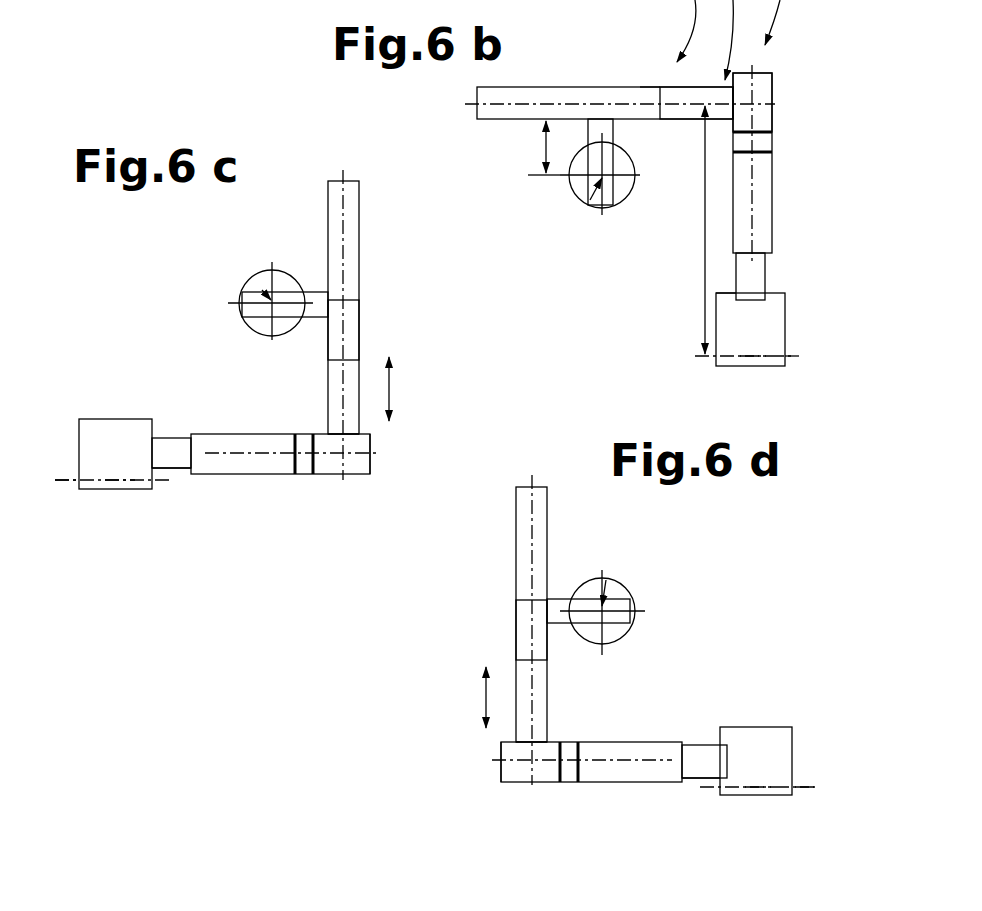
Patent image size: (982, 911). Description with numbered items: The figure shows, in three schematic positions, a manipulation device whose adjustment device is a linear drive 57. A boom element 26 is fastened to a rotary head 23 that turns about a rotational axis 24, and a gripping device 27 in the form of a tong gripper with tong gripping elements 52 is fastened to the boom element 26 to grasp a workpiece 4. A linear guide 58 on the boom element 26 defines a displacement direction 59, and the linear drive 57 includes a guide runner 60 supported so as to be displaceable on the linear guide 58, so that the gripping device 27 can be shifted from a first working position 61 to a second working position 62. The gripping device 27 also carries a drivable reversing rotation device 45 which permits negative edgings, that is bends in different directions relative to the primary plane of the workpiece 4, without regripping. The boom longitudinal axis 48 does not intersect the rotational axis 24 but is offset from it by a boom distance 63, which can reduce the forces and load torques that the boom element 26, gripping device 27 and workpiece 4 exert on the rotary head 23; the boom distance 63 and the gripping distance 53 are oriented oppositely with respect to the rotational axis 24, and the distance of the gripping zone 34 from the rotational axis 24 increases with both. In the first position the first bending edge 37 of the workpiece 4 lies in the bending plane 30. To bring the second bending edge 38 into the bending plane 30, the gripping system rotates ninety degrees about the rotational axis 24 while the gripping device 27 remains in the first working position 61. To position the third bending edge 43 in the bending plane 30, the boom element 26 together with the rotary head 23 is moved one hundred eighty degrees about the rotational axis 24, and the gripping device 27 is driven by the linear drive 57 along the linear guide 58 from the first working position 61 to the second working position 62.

In FIG. 6B, the workpiece 4 is at (730, 313).
In FIG. 6C, the workpiece 4 is at (128, 436).
In FIG. 6D, the workpiece 4 is at (752, 740).
In FIG. 6B, the rotary head 23 is at (572, 190).
In FIG. 6C, the rotary head 23 is at (255, 326).
In FIG. 6D, the rotary head 23 is at (620, 597).
In FIG. 6B, the rotational axis 24 is at (590, 200).
In FIG. 6C, the rotational axis 24 is at (262, 290).
In FIG. 6D, the rotational axis 24 is at (606, 580).
In FIG. 6B, the boom element 26 is at (687, 110).
In FIG. 6C, the boom element 26 is at (352, 358).
In FIG. 6D, the boom element 26 is at (522, 555).
In FIG. 6B, the gripping device 27 is at (762, 225).
In FIG. 6C, the gripping device 27 is at (268, 465).
In FIG. 6D, the gripping device 27 is at (598, 772).
In FIG. 6B, the bending plane 30 is at (805, 352).
In FIG. 6C, the bending plane 30 is at (65, 478).
In FIG. 6D, the bending plane 30 is at (808, 785).
In FIG. 6B, the gripping zone 34 is at (716, 296).
In FIG. 6C, the gripping zone 34 is at (152, 470).
In FIG. 6D, the gripping zone 34 is at (715, 776).
In FIG. 6B, the first bending edge 37 is at (755, 352).
In FIG. 6B, the second bending edge 38 is at (647, 88).
In FIG. 6C, the second bending edge 38 is at (122, 478).
In FIG. 6D, the third bending edge 43 is at (760, 785).
In FIG. 6B, the reversing rotation device 45 is at (765, 143).
In FIG. 6C, the reversing rotation device 45 is at (305, 465).
In FIG. 6D, the reversing rotation device 45 is at (565, 745).
In FIG. 6B, the boom longitudinal axis 48 is at (608, 102).
In FIG. 6B, the tong gripping elements 52 is at (752, 280).
In FIG. 6C, the tong gripping elements 52 is at (178, 450).
In FIG. 6D, the tong gripping elements 52 is at (697, 755).
In FIG. 6B, the gripping distance 53 is at (705, 240).
In FIG. 6C, the linear drive 57 is at (320, 430).
In FIG. 6D, the linear drive 57 is at (542, 726).
In FIG. 6C, the linear guide 58 is at (344, 334).
In FIG. 6D, the linear guide 58 is at (516, 630).
In FIG. 6C, the displacement direction 59 is at (392, 390).
In FIG. 6D, the displacement direction 59 is at (484, 697).
In FIG. 6B, the guide runner 60 is at (765, 95).
In FIG. 6C, the first working position 61 is at (374, 449).
In FIG. 6D, the second working position 62 is at (480, 772).
In FIG. 6B, the boom distance 63 is at (546, 140).